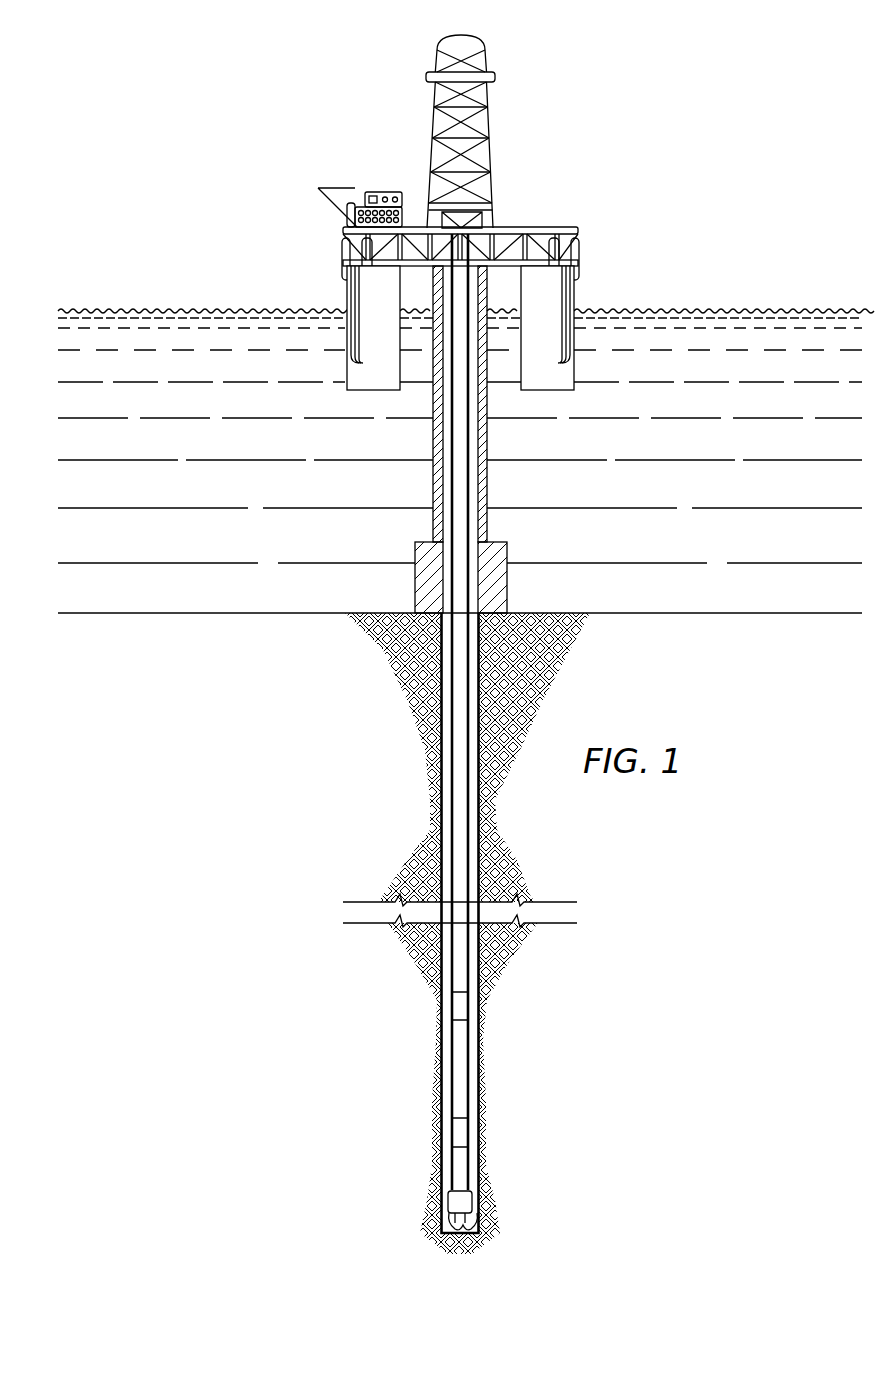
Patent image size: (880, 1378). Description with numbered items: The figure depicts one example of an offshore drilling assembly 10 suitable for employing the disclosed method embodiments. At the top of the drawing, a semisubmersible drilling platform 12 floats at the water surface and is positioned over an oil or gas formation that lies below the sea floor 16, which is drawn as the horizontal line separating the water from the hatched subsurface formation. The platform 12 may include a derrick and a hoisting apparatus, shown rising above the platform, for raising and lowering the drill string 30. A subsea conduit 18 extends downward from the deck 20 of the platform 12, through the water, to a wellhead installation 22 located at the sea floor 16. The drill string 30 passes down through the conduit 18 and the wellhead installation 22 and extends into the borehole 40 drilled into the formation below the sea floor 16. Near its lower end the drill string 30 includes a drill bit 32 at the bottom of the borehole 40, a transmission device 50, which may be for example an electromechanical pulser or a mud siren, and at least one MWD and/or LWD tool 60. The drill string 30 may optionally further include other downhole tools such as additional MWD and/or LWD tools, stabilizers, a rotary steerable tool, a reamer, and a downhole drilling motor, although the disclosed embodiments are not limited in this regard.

The offshore drilling assembly 10 is at (570, 109).
The semisubmersible drilling platform 12 is at (465, 150).
The sea floor 16 is at (728, 612).
The subsea conduit 18 is at (487, 483).
The deck 20 is at (580, 253).
The wellhead installation 22 is at (500, 543).
The drill string 30 is at (462, 403).
The drill bit 32 is at (473, 1225).
The borehole 40 is at (441, 802).
The transmission device 50 is at (458, 1005).
The MWD and/or LWD tool 60 is at (462, 1068).